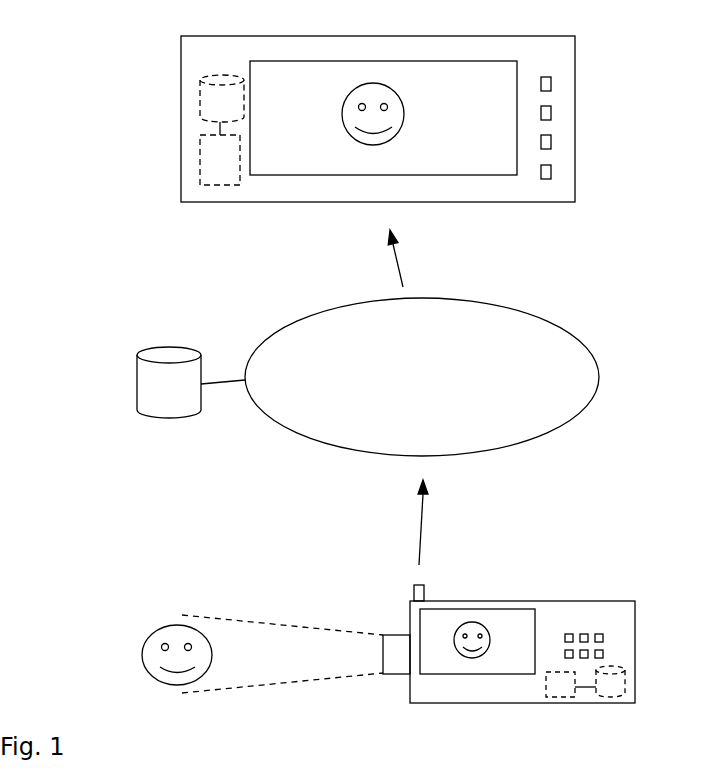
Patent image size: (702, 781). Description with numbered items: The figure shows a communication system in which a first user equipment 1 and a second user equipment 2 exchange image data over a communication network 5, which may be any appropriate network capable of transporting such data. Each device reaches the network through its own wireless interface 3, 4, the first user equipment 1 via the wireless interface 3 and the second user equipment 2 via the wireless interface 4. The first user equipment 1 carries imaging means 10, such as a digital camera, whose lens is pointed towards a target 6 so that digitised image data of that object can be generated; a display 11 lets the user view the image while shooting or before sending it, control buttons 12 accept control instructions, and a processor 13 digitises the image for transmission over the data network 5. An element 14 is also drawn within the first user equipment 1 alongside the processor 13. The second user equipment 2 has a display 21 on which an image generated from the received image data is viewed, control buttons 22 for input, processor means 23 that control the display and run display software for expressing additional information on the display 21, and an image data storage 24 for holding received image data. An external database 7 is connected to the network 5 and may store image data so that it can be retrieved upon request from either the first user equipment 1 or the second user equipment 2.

The first user equipment 1 is at (445, 692).
The second user equipment 2 is at (560, 67).
The wireless interface 3 is at (423, 520).
The wireless interface 4 is at (398, 262).
The communication network 5 is at (547, 335).
The target 6 is at (165, 677).
The external database 7 is at (145, 375).
The imaging means 10 is at (398, 667).
The display 11 is at (502, 665).
The control buttons 12 is at (598, 634).
The processor 13 is at (560, 692).
The memory 14 is at (613, 692).
The display 21 is at (486, 160).
The control buttons 22 is at (544, 141).
The processor means 23 is at (212, 165).
The image data storage 24 is at (210, 102).